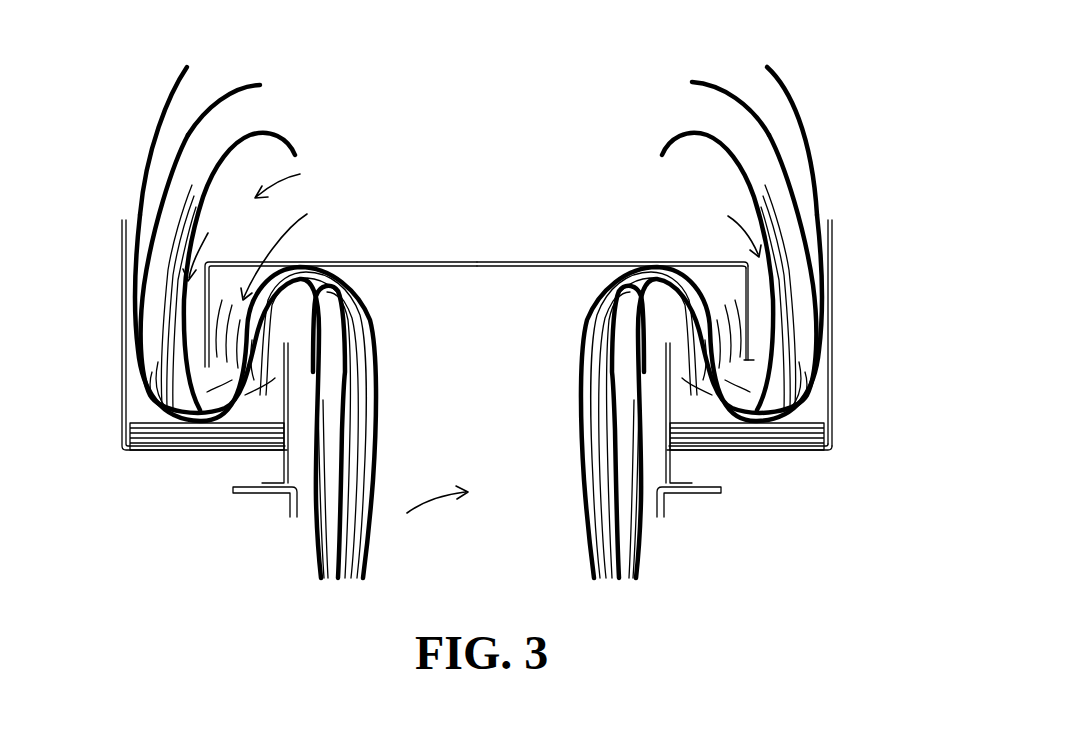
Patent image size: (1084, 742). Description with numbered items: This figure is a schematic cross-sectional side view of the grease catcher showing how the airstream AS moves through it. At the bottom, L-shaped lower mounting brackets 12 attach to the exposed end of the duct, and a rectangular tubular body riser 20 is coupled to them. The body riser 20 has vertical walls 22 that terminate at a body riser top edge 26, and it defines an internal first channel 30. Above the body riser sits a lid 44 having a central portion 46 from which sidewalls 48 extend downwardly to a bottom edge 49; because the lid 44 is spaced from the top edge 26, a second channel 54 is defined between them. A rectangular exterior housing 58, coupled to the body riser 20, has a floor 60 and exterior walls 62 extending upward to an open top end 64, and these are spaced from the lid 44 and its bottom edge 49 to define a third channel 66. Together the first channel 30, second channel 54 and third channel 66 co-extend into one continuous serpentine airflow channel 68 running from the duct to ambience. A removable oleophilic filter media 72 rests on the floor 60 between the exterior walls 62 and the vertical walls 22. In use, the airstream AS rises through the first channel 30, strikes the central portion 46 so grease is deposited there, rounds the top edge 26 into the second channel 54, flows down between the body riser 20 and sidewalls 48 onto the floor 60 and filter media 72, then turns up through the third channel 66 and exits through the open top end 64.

The lower mounting bracket 12 is at (702, 487).
The body riser 20 is at (287, 387).
The vertical walls 22 is at (287, 413).
The body riser top edge 26 is at (668, 346).
The first channel 30 is at (429, 515).
The lid 44 is at (464, 262).
The central portion 46 is at (548, 262).
The sidewalls 48 is at (752, 281).
The bottom edge 49 is at (752, 362).
The second channel 54 is at (291, 249).
The exterior housing 58 is at (836, 388).
The floor 60 is at (791, 447).
The exterior walls 62 is at (832, 413).
The open top end 64 is at (296, 178).
The third channel 66 is at (215, 244).
The serpentine airflow channel 68 is at (726, 226).
The filter media 72 is at (178, 443).
The airstream AS is at (216, 155).